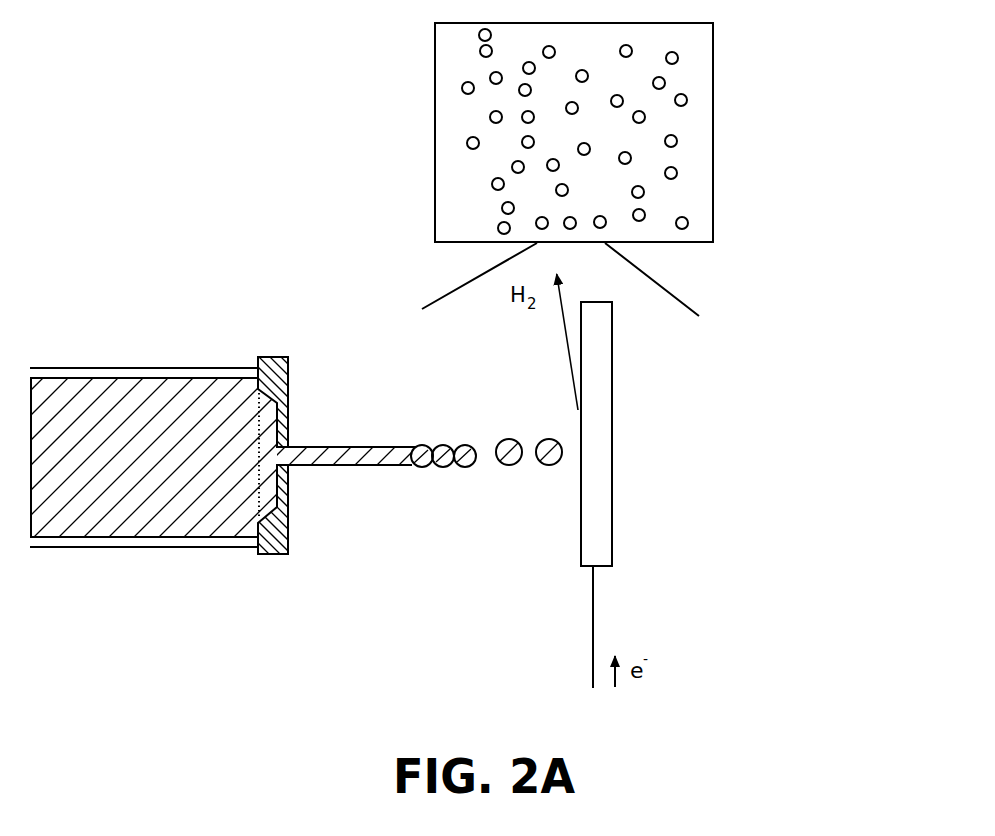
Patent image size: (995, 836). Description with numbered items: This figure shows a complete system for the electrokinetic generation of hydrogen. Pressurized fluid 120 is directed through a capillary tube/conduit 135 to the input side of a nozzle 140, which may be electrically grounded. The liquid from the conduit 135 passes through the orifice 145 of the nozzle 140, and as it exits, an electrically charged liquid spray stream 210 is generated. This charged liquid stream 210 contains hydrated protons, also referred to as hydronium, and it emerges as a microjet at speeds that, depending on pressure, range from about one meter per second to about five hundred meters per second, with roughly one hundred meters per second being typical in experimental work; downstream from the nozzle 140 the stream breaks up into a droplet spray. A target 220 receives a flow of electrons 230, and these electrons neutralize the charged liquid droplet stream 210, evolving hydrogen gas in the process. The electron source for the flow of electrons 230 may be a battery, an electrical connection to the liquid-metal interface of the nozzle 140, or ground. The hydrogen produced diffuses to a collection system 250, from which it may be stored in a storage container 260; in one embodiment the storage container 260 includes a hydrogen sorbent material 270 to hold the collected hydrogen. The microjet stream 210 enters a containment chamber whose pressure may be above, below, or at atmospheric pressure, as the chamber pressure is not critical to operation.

The pressurized fluid 120 is at (124, 456).
The capillary tube/conduit 135 is at (162, 373).
The nozzle 140 is at (283, 555).
The orifice 145 is at (290, 445).
The charged liquid spray stream 210 is at (373, 462).
The target 220 is at (612, 515).
The flow of electrons 230 is at (593, 638).
The collection system 250 is at (688, 288).
The storage container 260 is at (713, 145).
The hydrogen sorbent material 270 is at (666, 82).